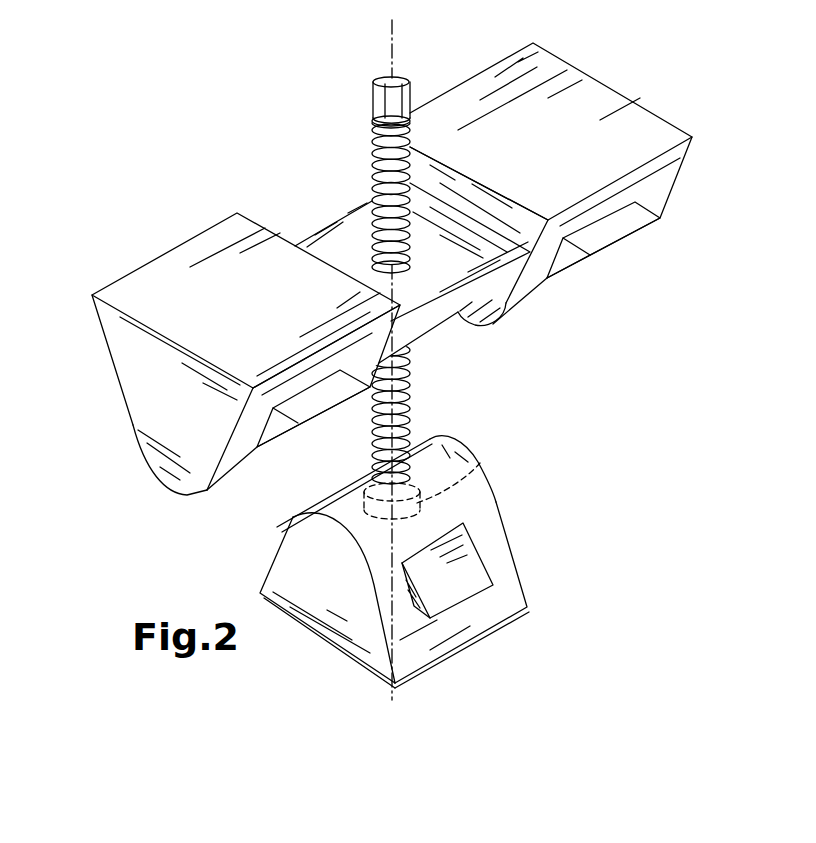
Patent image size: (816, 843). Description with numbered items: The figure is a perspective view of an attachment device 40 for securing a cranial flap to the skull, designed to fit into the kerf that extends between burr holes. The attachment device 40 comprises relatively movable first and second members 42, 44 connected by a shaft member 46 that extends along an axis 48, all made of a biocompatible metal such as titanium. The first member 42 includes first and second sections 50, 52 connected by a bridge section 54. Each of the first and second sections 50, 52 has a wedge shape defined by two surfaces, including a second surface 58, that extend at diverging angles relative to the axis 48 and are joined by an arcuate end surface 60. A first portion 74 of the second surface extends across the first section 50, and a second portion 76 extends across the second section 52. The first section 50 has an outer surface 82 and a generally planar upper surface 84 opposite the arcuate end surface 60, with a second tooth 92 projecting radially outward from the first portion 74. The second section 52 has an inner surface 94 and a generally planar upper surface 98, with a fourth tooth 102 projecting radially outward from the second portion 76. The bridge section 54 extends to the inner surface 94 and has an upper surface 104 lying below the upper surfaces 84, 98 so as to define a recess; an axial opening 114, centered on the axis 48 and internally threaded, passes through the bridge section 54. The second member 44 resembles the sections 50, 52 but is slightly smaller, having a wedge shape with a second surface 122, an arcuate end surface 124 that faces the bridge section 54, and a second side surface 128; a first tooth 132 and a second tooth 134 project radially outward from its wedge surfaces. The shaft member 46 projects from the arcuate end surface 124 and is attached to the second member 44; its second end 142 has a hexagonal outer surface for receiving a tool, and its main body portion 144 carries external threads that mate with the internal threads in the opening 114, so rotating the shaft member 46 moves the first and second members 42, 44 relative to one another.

The attachment device 40 is at (250, 136).
The first member 42 is at (110, 382).
The second member 44 is at (504, 500).
The shaft member 46 is at (420, 393).
The axis 48 is at (393, 56).
The first section 50 is at (96, 330).
The second section 52 is at (664, 109).
The bridge section 54 is at (348, 204).
The second surface 58 is at (668, 170).
The arcuate end surface 60 is at (180, 493).
The first portion of the second surface 74 is at (247, 447).
The second portion of the second surface 76 is at (537, 287).
The outer surface 82 is at (150, 422).
The upper surface 84 is at (163, 293).
The second tooth 92 is at (320, 405).
The inner surface 94 is at (433, 167).
The upper surface 98 is at (598, 103).
The fourth tooth 102 is at (610, 230).
The upper surface of the bridge section 104 is at (337, 243).
The axial opening 114 is at (412, 267).
The second surface 122 is at (493, 553).
The arcuate end surface 124 is at (450, 437).
The second side surface 128 is at (322, 623).
The first tooth 132 is at (253, 540).
The second tooth 134 is at (463, 583).
The second end 142 is at (378, 107).
The main body portion 144 is at (480, 463).